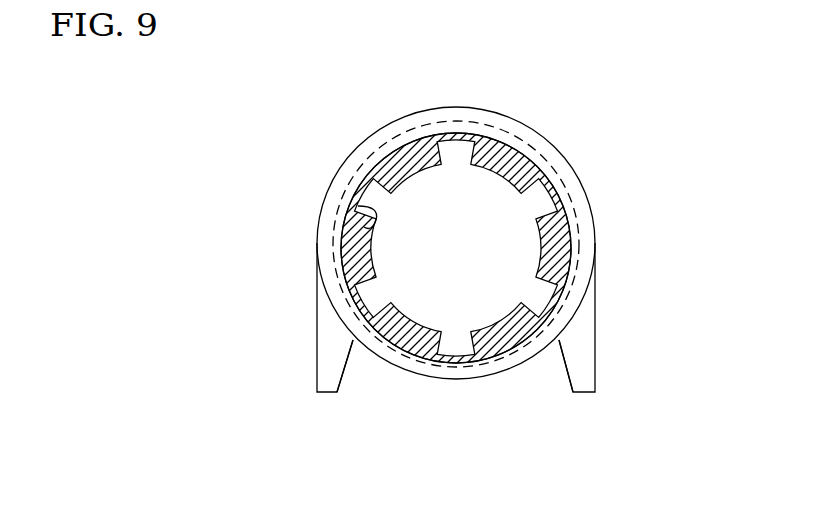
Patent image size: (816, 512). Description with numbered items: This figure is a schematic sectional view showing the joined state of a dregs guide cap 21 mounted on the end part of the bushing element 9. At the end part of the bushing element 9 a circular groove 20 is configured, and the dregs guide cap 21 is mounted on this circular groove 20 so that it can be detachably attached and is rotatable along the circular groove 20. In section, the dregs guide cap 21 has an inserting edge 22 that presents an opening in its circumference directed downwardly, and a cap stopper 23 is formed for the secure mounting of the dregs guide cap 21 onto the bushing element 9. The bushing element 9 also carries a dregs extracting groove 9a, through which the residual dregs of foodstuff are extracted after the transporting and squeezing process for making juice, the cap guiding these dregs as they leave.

The bushing element 9 is at (518, 363).
The dregs extracting groove 9a is at (362, 226).
The circular groove 20 is at (403, 363).
The dregs guide cap 21 is at (553, 152).
The inserting edge 22 is at (556, 248).
The cap stopper 23 is at (354, 338).